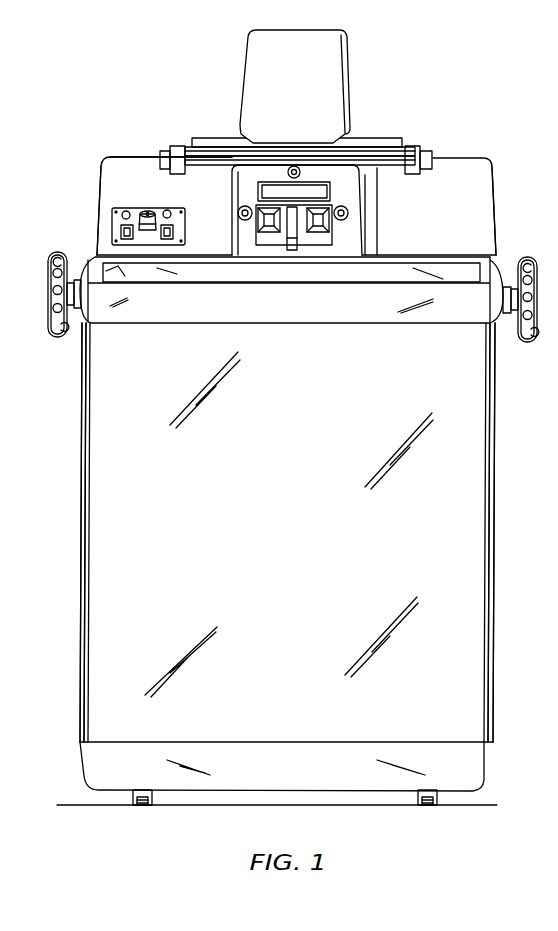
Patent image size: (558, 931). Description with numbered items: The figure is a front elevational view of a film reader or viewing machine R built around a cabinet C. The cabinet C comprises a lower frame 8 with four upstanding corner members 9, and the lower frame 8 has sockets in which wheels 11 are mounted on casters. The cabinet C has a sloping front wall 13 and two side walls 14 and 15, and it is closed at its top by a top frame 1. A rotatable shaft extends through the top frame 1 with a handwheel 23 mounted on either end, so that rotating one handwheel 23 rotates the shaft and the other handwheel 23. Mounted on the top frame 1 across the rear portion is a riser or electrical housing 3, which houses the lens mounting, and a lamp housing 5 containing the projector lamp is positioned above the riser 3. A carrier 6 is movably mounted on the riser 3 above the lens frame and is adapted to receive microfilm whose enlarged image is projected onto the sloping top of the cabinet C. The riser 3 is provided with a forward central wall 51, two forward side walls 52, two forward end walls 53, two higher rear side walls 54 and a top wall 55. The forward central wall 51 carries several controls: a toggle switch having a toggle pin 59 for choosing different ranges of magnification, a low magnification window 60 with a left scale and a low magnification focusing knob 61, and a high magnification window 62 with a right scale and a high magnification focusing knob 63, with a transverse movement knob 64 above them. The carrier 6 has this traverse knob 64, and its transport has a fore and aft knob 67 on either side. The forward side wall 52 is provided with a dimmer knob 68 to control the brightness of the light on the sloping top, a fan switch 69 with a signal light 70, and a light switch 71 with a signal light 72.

The top frame 1 is at (198, 309).
The riser 3 is at (459, 156).
The lamp housing 5 is at (306, 83).
The carrier 6 is at (388, 136).
The lower frame 8 is at (310, 762).
The corner members 9 is at (82, 463).
The wheels 11 is at (146, 806).
The sloping front wall 13 is at (280, 488).
The side wall 14 is at (494, 621).
The side wall 15 is at (82, 624).
The handwheel 23 is at (54, 338).
The forward central wall 51 is at (246, 249).
The forward side wall 52 is at (200, 215).
The forward end wall 53 is at (230, 243).
The rear side wall 54 is at (106, 167).
The top wall 55 is at (128, 155).
The toggle pin 59 is at (292, 251).
The low magnification window 60 is at (277, 233).
The low magnification focusing knob 61 is at (247, 207).
The high magnification window 62 is at (317, 233).
The high magnification focusing knob 63 is at (349, 213).
The transverse movement knob 64 is at (296, 166).
The fore and aft knob 67 is at (165, 148).
The dimmer knob 68 is at (148, 211).
The fan switch 69 is at (121, 231).
The signal light 70 is at (125, 210).
The light switch 71 is at (168, 239).
The signal light 72 is at (171, 211).
The film reader R is at (86, 187).
The cabinet C is at (74, 549).